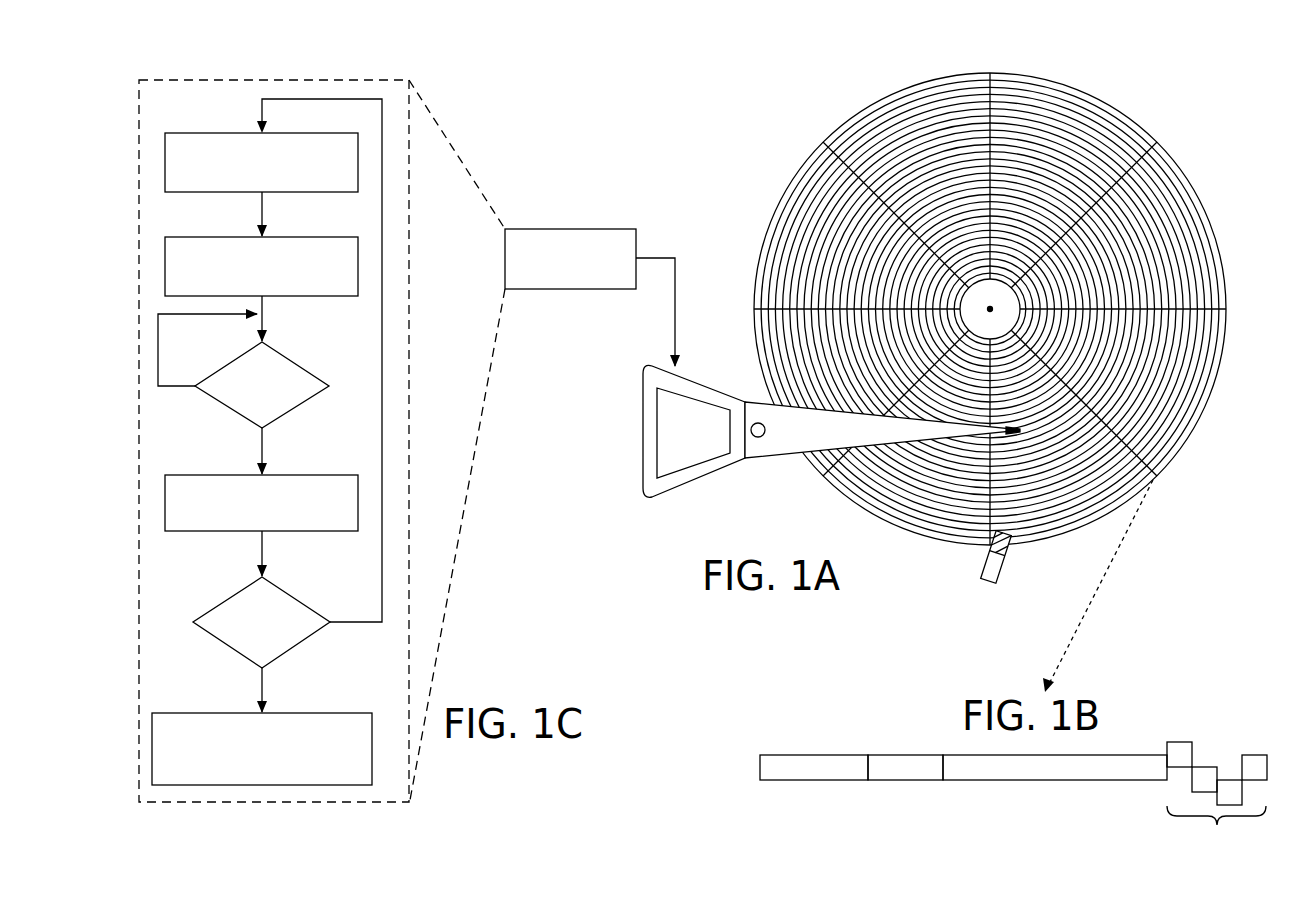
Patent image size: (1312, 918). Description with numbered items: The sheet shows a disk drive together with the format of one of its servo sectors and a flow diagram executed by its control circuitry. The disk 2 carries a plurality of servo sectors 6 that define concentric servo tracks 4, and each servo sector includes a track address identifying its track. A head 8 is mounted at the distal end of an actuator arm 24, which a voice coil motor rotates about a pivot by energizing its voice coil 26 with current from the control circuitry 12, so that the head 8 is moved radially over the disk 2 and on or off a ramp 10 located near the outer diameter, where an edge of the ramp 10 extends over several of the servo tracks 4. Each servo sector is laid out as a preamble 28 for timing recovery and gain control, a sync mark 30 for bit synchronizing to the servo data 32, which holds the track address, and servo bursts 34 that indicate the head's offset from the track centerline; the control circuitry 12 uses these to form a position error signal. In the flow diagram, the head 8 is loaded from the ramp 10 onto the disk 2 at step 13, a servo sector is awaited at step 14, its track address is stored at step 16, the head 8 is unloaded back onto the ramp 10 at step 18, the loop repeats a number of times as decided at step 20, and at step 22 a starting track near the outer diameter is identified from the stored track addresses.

In FIG. 1A, the disk 2 is at (788, 128).
In FIG. 1A, the servo tracks 4 is at (1185, 215).
In FIG. 1A, the servo sectors 6 is at (990, 73).
In FIG. 1A, the head 8 is at (1017, 425).
In FIG. 1A, the ramp 10 is at (1008, 574).
In FIG. 1A, the control circuitry 12 is at (571, 229).
In FIG. 1C, the load head step 13 is at (293, 297).
In FIG. 1C, the servo sector detection step 14 is at (298, 367).
In FIG. 1C, the store track address step 16 is at (310, 474).
In FIG. 1C, the unload head step 18 is at (293, 193).
In FIG. 1C, the repeat decision step 20 is at (292, 598).
In FIG. 1C, the identify starting track step 22 is at (312, 712).
In FIG. 1A, the actuator arm 24 is at (755, 462).
In FIG. 1A, the voice coil 26 is at (684, 494).
In FIG. 1B, the preamble 28 is at (805, 781).
In FIG. 1B, the sync mark 30 is at (903, 781).
In FIG. 1B, the servo data 32 is at (1053, 781).
In FIG. 1B, the servo bursts 34 is at (1230, 740).